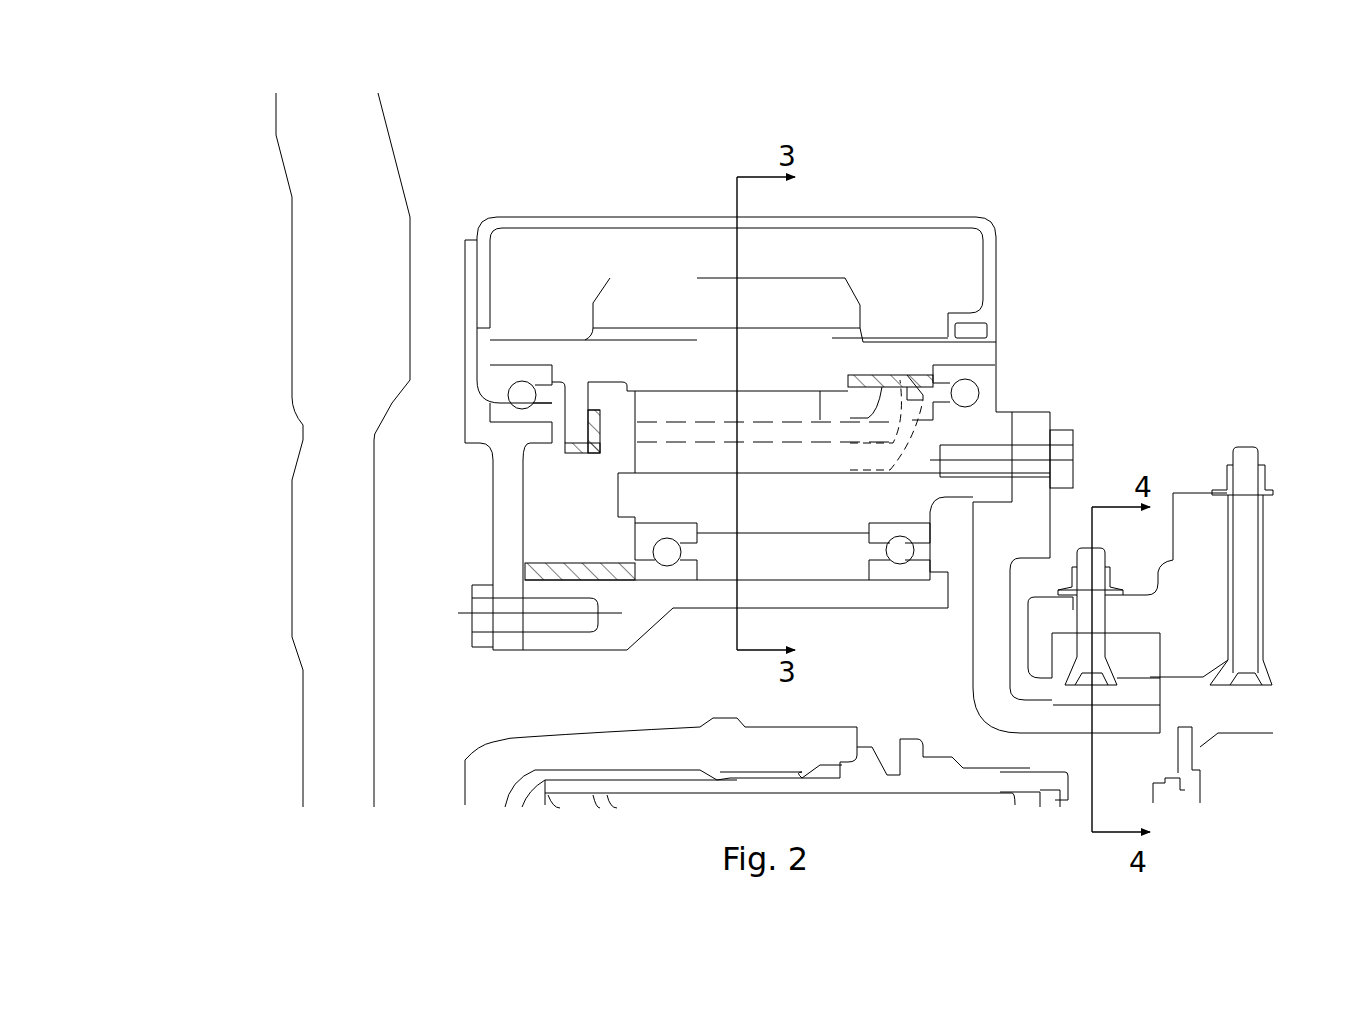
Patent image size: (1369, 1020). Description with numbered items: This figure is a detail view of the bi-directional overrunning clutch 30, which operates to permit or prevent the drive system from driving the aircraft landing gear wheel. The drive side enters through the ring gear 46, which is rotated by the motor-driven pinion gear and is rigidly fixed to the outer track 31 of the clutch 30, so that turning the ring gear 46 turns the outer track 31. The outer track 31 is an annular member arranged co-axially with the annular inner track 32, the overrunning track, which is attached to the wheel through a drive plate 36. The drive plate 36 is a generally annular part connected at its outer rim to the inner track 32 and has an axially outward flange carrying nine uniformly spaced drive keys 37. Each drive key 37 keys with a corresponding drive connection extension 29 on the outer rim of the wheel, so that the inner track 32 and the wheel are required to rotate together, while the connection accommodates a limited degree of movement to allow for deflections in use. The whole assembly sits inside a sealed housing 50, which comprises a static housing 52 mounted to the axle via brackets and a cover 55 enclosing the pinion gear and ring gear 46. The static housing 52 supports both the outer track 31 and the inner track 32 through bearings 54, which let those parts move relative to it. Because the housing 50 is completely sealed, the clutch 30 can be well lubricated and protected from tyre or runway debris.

The drive connection extension 29 is at (1198, 545).
The bi-directional overrunning clutch 30 is at (1130, 173).
The outer track 31 is at (845, 357).
The inner track 32 is at (832, 512).
The drive plate 36 is at (1037, 527).
The drive key 37 is at (1160, 692).
The ring gear 46 is at (780, 308).
The housing 50 is at (468, 300).
The static housing 52 is at (563, 643).
The bearings 54 is at (653, 549).
The cover 55 is at (483, 220).